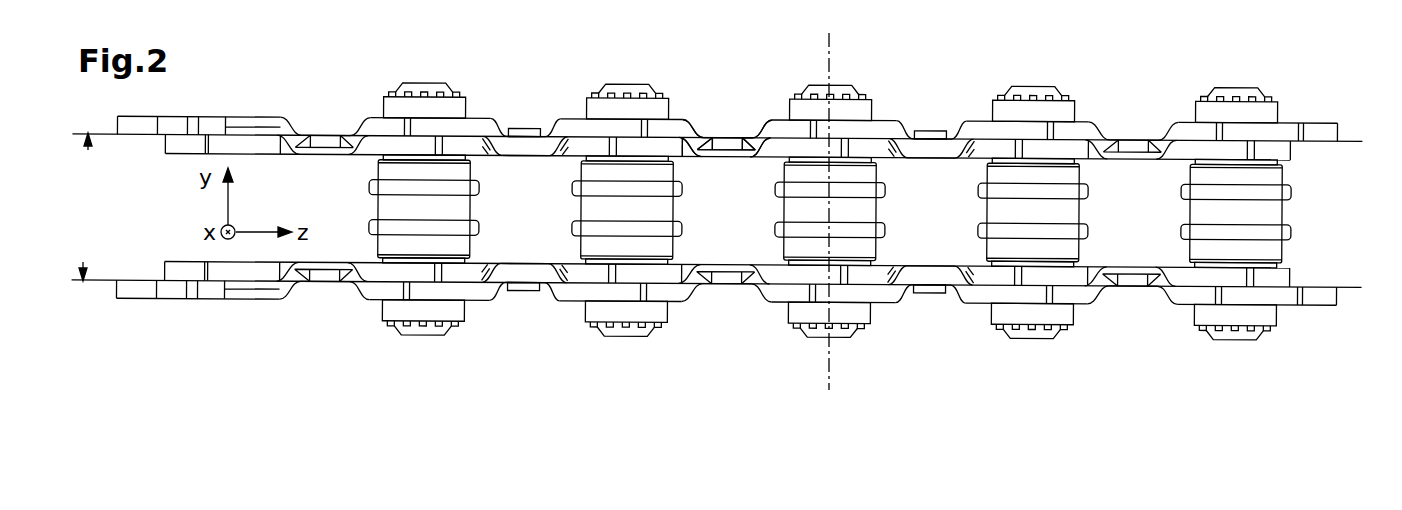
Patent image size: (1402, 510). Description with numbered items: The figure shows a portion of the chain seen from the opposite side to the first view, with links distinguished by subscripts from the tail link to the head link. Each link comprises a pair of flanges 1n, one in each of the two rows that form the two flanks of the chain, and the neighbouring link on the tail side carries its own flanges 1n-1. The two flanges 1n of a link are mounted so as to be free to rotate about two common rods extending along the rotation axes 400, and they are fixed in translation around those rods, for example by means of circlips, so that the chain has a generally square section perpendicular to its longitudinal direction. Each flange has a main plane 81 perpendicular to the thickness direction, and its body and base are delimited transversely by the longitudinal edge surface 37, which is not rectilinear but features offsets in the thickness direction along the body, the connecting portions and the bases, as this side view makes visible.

The flange 1n is at (698, 120).
The flange of link n-1 1n-1 is at (520, 279).
The longitudinal edge surface 37 is at (737, 128).
The rotation axis 400 is at (832, 65).
The main plane 81 is at (88, 148).